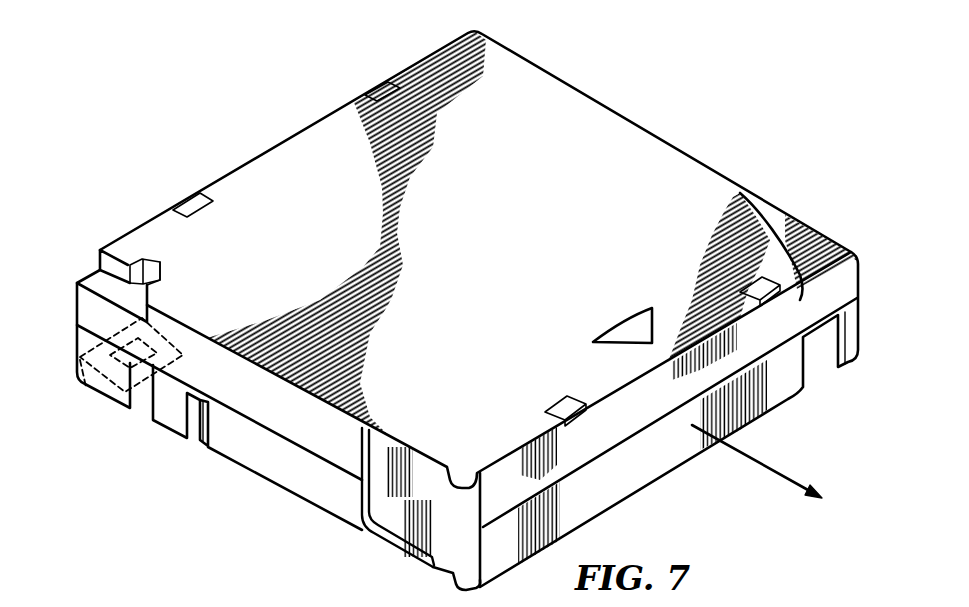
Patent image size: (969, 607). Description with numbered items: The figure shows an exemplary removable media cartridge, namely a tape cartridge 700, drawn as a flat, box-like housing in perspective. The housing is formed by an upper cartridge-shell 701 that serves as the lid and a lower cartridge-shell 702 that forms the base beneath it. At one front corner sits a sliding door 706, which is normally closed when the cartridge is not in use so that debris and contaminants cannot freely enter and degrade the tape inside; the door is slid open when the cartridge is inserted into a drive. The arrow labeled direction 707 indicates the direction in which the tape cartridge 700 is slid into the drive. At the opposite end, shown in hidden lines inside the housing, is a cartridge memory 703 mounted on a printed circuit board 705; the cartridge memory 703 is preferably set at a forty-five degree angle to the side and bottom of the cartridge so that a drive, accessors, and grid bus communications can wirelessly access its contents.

The tape cartridge 700 is at (440, 305).
The upper cartridge-shell 701 is at (277, 143).
The lower cartridge-shell 702 is at (268, 468).
The cartridge memory 703 is at (173, 306).
The printed circuit board 705 is at (88, 389).
The sliding door 706 is at (392, 528).
The direction 707 is at (784, 470).